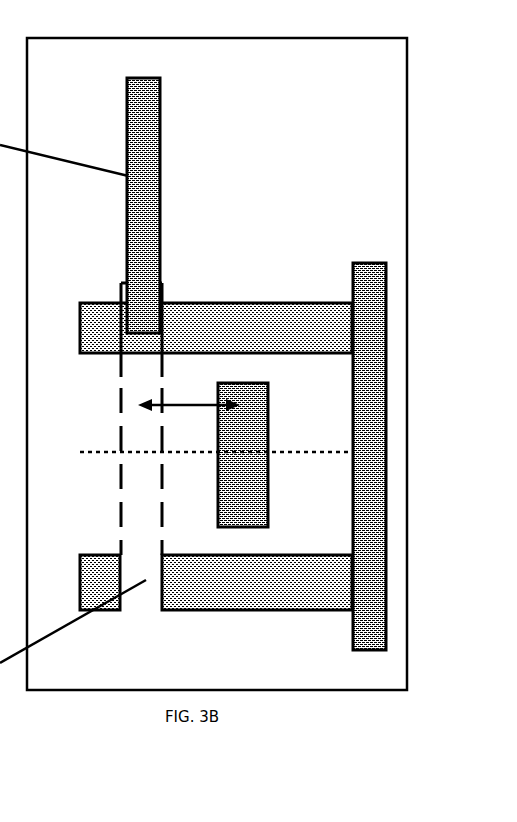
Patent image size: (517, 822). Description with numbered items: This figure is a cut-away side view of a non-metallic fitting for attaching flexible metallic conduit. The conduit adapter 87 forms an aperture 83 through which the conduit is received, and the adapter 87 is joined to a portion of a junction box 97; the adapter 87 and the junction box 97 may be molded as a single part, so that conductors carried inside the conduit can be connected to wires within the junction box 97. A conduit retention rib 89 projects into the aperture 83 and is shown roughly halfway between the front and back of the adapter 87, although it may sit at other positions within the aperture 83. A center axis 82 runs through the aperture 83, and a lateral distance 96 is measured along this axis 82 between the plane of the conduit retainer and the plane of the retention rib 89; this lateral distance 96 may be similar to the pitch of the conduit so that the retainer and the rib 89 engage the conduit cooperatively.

The center axis 82 is at (292, 453).
The aperture 83 is at (213, 419).
The conduit adapter 87 is at (313, 323).
The conduit retention rib 89 is at (235, 498).
The lateral distance 96 is at (189, 394).
The junction box 97 is at (373, 488).